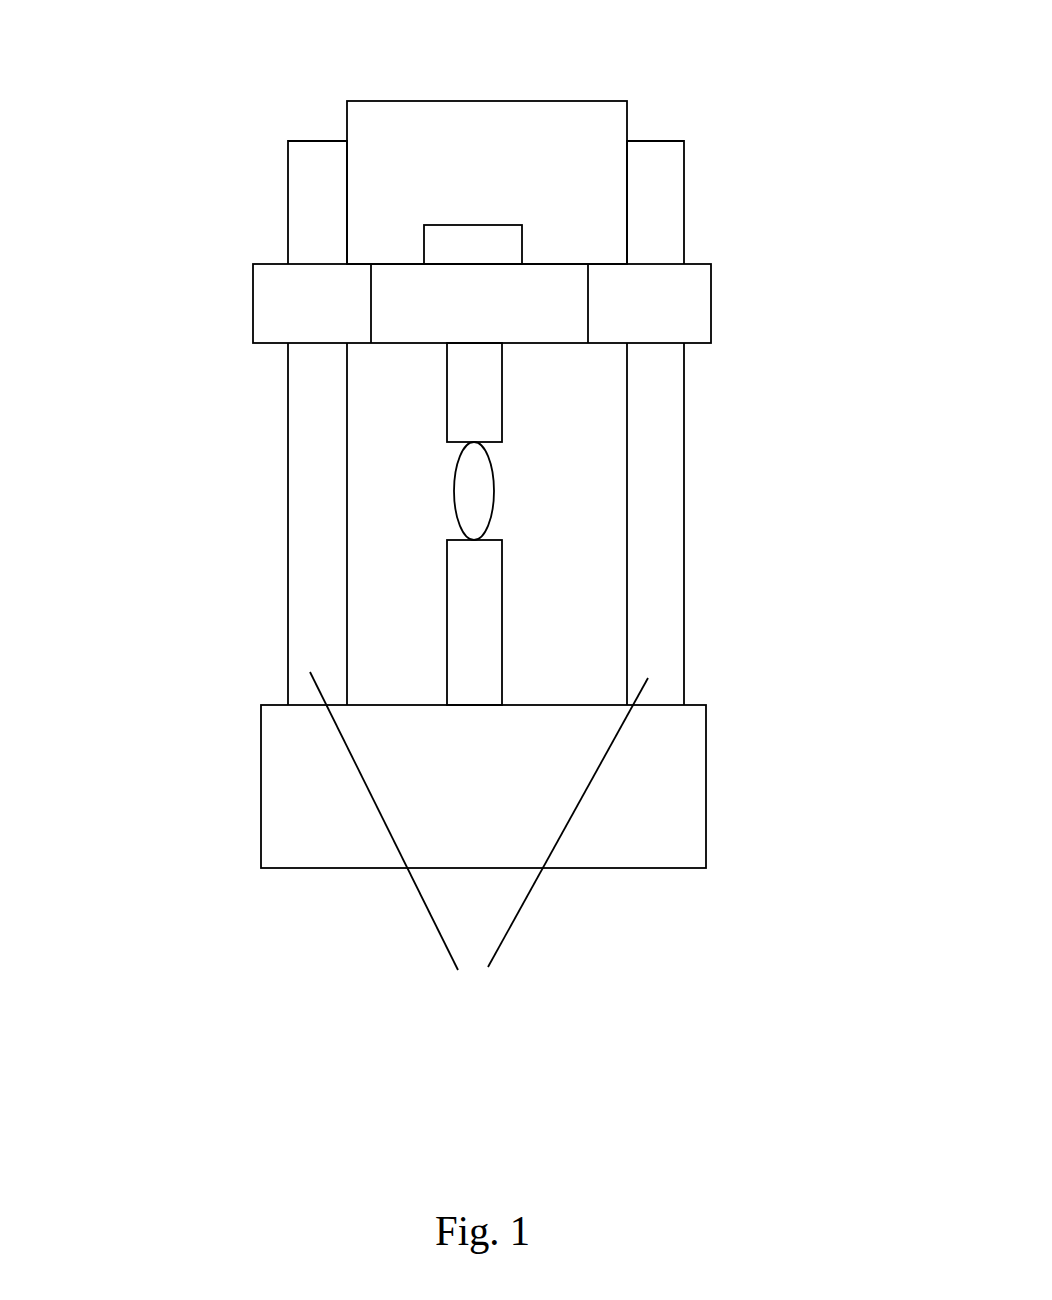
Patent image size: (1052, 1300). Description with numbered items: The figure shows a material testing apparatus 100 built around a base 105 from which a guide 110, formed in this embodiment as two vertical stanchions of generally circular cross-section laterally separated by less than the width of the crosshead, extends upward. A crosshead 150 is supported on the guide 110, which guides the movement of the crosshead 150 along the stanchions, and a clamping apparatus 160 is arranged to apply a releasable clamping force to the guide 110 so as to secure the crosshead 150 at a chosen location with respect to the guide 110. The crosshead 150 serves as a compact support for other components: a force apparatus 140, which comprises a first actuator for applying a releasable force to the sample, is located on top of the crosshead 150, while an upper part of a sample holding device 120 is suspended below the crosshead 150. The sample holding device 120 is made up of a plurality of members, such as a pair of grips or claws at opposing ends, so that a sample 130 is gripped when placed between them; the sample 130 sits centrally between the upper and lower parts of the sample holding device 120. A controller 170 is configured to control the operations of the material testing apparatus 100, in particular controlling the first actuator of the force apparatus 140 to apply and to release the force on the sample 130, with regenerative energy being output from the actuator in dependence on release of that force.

The material testing apparatus 100 is at (185, 116).
The base 105 is at (671, 817).
The guide 110 is at (479, 859).
The sample holding device 120 is at (472, 592).
The sample 130 is at (480, 502).
The force apparatus 140 is at (523, 134).
The crosshead 150 is at (497, 316).
The clamping apparatus 160 is at (613, 283).
The controller 170 is at (489, 242).